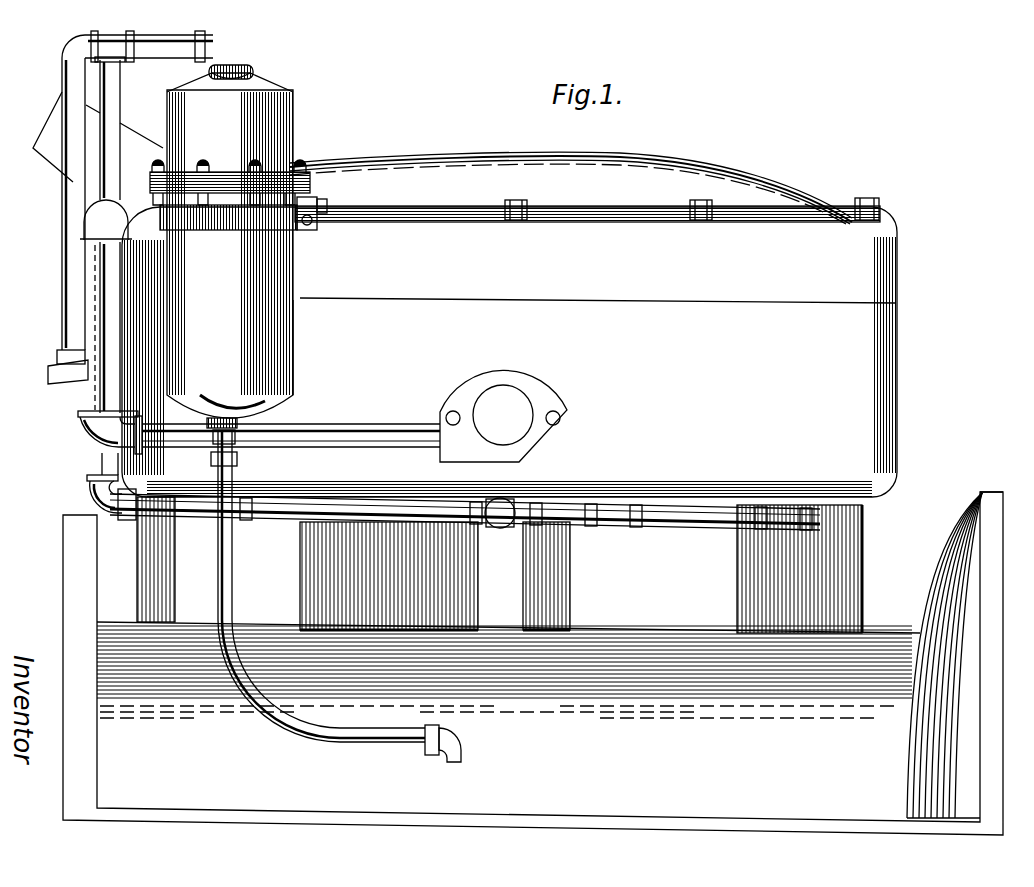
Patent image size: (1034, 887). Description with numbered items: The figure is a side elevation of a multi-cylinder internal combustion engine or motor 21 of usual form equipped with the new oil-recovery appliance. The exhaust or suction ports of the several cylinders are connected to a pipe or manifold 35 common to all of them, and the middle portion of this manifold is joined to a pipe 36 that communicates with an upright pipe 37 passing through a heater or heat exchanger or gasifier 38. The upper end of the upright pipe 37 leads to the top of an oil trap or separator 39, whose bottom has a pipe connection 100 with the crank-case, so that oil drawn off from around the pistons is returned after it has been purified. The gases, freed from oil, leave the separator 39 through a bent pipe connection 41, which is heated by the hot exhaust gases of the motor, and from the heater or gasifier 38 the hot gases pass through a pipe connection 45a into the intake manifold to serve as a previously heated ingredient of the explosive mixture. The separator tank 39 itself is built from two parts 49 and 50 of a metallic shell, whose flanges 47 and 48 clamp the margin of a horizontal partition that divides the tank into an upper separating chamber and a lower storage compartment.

The internal combustion engine 21 is at (509, 324).
The pipe or manifold 35 is at (700, 524).
The pipe 36 is at (320, 522).
The upright pipe 37 is at (100, 462).
The heater or heat exchanger or gasifier 38 is at (92, 316).
The oil trap or separator 39 is at (230, 259).
The bent pipe connection 41 is at (72, 196).
The pipe connection 45a is at (360, 430).
The flange 47 is at (307, 170).
The flange 48 is at (298, 232).
The part of the metallic shell 49 is at (297, 115).
The part of the metallic shell 50 is at (297, 348).
The pipe connection 100 is at (288, 714).